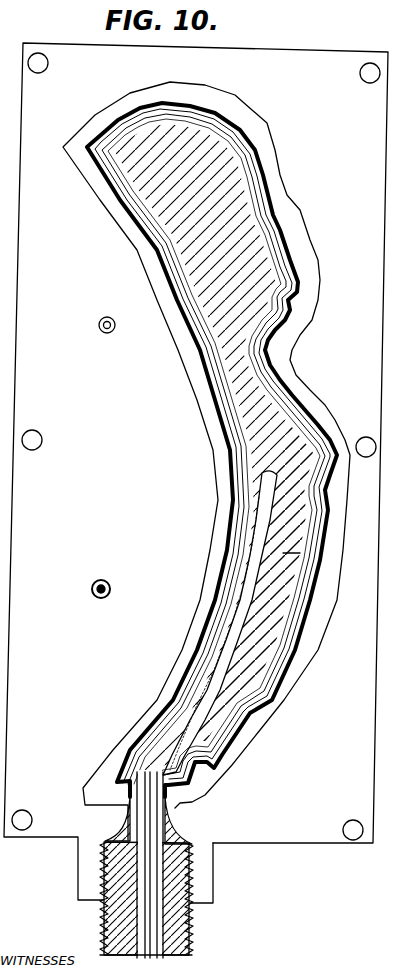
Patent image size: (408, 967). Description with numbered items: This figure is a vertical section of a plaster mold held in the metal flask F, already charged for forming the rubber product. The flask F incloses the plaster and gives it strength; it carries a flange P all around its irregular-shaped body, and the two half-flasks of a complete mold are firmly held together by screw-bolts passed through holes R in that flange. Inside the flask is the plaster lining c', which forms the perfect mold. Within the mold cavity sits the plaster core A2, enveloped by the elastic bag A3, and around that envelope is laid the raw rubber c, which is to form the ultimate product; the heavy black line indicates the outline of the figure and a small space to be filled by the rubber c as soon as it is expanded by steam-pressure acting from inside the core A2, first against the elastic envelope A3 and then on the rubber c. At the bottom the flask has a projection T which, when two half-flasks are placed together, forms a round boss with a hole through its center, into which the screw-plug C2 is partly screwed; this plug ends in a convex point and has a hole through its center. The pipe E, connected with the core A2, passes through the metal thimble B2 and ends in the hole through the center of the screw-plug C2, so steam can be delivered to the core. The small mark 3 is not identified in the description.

The flange P is at (196, 471).
The holes R is at (196, 446).
The metal flask F is at (206, 461).
The plaster core A2 is at (214, 451).
The elastic bag A3 is at (245, 598).
The rubber c is at (212, 446).
The plaster lining c' is at (212, 450).
The metal thimble B2 is at (172, 840).
The projection T is at (212, 873).
The screw-plug C2 is at (158, 898).
The pipe E is at (146, 868).
The channel 3 is at (262, 473).